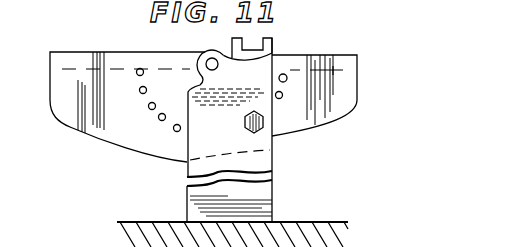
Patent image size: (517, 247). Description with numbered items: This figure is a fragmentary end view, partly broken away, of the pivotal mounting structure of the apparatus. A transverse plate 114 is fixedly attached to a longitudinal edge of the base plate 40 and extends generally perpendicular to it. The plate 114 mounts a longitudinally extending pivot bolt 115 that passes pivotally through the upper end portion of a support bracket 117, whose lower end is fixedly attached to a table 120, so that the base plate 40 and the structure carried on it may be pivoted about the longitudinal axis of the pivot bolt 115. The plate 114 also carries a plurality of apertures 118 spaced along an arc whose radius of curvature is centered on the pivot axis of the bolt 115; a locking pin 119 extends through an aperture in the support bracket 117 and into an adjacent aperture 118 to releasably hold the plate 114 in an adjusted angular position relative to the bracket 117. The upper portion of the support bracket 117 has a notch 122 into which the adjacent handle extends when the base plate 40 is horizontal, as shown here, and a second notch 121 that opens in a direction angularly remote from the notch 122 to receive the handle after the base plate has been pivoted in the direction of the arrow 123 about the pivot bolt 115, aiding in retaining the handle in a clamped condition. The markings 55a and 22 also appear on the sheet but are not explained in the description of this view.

The center line of support 40 is at (62, 71).
The bracket 114 is at (71, 122).
The hook eye 115 is at (215, 70).
The joint / break line 117 is at (267, 191).
The holes 118 is at (139, 94).
The nut 119 is at (263, 126).
The ground surface 120 is at (323, 222).
The plate 121 is at (217, 100).
The fork member 122 is at (262, 58).
The direction arrow 123 is at (176, 60).
The sheet label 55a is at (15, 9).
The support 22 is at (98, 246).